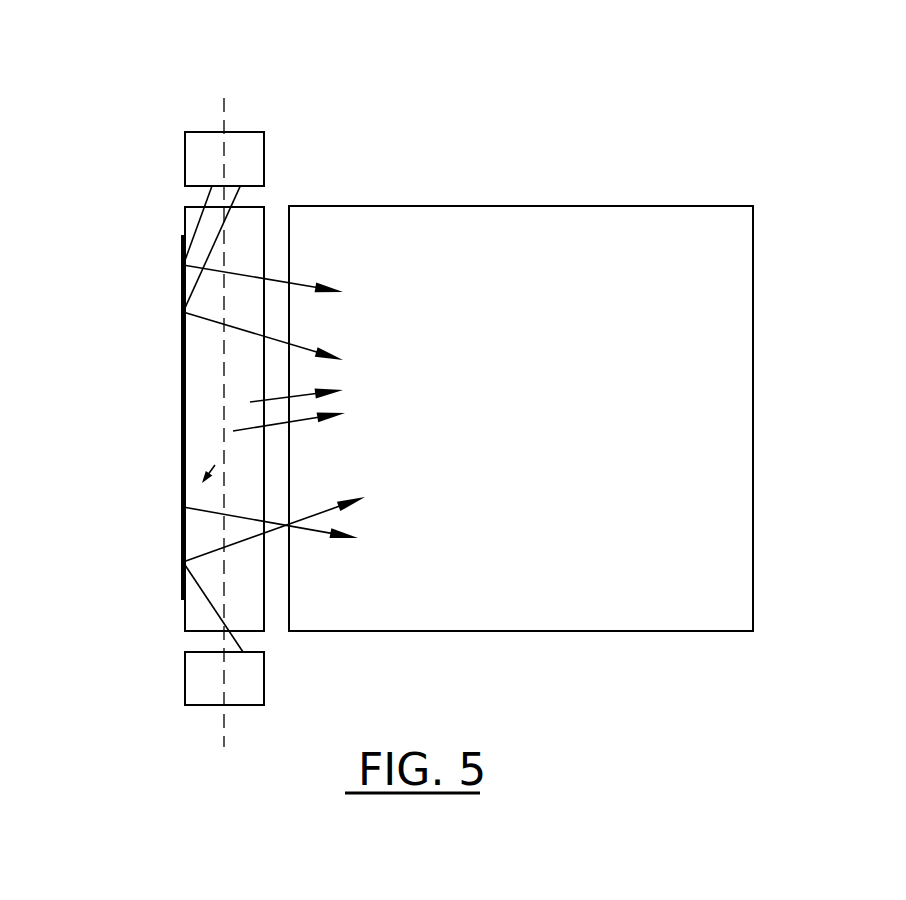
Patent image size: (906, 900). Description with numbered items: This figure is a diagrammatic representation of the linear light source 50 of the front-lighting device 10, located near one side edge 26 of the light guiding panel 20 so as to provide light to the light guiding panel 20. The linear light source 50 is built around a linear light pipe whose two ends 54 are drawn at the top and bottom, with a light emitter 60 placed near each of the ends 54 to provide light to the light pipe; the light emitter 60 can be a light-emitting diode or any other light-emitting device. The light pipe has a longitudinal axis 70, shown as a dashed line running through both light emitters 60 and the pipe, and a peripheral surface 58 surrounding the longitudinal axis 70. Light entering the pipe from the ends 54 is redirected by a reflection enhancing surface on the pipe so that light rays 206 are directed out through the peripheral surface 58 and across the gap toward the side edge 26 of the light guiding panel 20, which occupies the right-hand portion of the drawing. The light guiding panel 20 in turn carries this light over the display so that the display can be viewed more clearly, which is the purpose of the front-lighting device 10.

The front-lighting device 10 is at (559, 120).
The light-guiding panel 20 is at (628, 232).
The side edge 26 is at (290, 330).
The linear light source 50 is at (130, 199).
The ends 54 is at (262, 203).
The peripheral surface 58 is at (265, 250).
The light emitter 60 is at (245, 145).
The longitudinal axis 70 is at (225, 105).
The light rays 206 is at (348, 342).